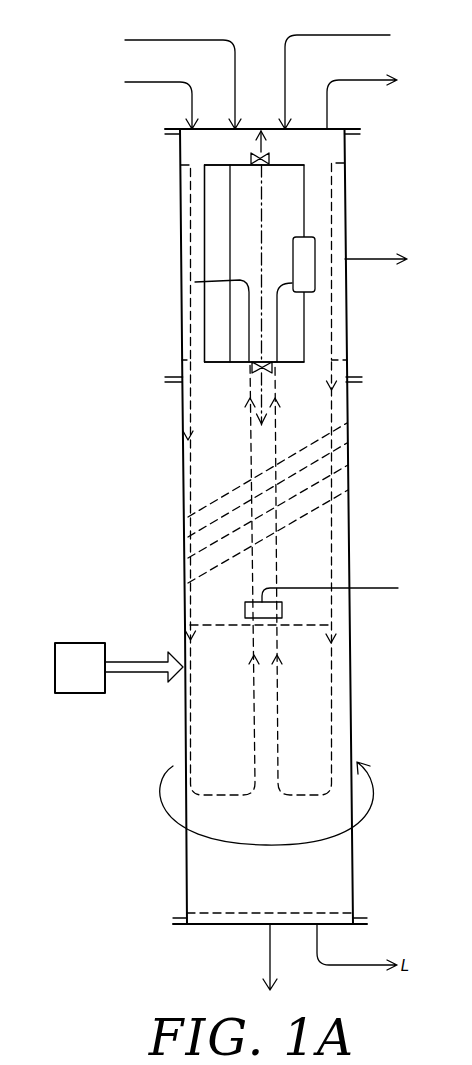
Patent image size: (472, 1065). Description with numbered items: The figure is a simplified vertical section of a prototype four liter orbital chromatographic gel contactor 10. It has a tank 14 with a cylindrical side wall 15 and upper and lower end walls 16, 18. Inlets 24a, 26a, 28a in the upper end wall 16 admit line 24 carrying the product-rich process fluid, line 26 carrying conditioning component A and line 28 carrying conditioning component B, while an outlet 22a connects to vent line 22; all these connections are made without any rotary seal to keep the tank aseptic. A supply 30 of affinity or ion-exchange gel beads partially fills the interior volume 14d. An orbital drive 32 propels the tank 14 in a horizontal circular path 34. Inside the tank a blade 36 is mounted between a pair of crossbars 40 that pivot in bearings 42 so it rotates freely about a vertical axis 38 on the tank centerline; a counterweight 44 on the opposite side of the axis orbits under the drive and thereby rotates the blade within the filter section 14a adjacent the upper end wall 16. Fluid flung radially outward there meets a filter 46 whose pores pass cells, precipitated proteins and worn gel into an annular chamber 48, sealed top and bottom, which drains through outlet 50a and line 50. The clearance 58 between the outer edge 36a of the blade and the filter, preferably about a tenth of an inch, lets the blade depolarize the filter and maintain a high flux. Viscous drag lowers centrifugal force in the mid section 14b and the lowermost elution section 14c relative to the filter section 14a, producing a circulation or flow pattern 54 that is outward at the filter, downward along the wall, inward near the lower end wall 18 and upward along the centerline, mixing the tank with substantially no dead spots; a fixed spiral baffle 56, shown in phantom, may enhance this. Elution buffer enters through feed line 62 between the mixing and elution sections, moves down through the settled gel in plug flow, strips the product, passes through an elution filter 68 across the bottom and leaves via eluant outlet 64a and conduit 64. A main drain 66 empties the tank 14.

The orbital chromatographic gel contactor 10 is at (113, 266).
The tank 14 is at (359, 479).
The filter section 14a is at (147, 237).
The mid section 14b is at (159, 517).
The elution section 14c is at (159, 735).
The interior volume 14d is at (349, 432).
The cylindrical side wall 15 is at (183, 604).
The upper end wall 16 is at (307, 127).
The lower end wall 18 is at (305, 925).
The vent line 22 is at (348, 80).
The outlet 22a is at (354, 121).
The line 24 is at (146, 82).
The inlet 24a is at (169, 126).
The line 26 is at (333, 35).
The inlet 26a is at (275, 116).
The line 28 is at (181, 40).
The inlet 28a is at (221, 117).
The supply of gel beads 30 is at (318, 624).
The orbital drive 32 is at (70, 681).
The horizontal circular path 34 is at (382, 806).
The blade 36 is at (222, 253).
The outer edge 36a is at (205, 282).
The vertical axis 38 is at (259, 384).
The crossbars 40 is at (286, 152).
The bearings 42 is at (251, 156).
The counterweight 44 is at (292, 240).
The filter 46 is at (190, 190).
The annular chamber 48 is at (342, 199).
The line 50 is at (370, 262).
The outlet 50a is at (348, 258).
The circulation or flow pattern 54 is at (331, 527).
The fixed spiral baffle 56 is at (330, 466).
The clearance 58 is at (195, 165).
The elution buffer solution feed line 62 is at (368, 588).
The eluant outlet conduit 64 is at (345, 966).
The eluant outlet 64a is at (333, 932).
The main drain 66 is at (270, 946).
The elution filter 68 is at (323, 913).